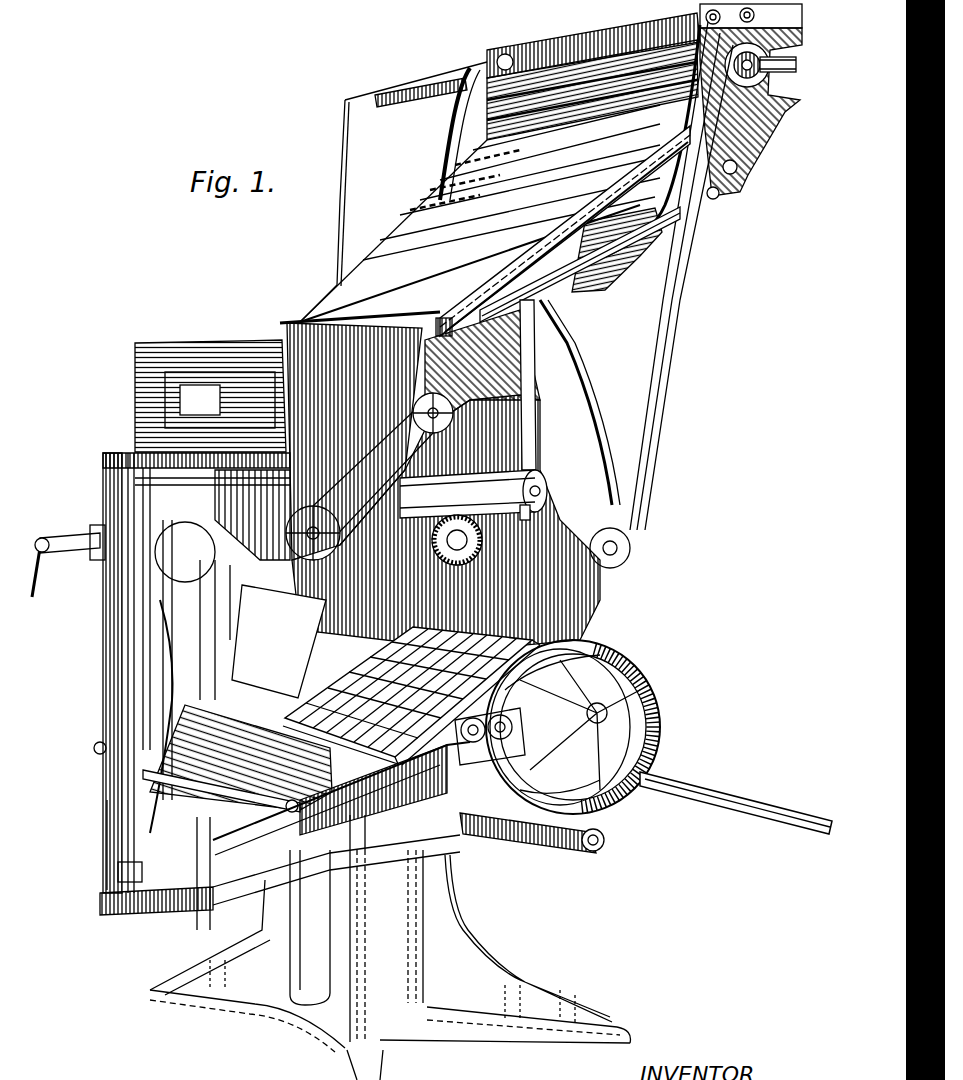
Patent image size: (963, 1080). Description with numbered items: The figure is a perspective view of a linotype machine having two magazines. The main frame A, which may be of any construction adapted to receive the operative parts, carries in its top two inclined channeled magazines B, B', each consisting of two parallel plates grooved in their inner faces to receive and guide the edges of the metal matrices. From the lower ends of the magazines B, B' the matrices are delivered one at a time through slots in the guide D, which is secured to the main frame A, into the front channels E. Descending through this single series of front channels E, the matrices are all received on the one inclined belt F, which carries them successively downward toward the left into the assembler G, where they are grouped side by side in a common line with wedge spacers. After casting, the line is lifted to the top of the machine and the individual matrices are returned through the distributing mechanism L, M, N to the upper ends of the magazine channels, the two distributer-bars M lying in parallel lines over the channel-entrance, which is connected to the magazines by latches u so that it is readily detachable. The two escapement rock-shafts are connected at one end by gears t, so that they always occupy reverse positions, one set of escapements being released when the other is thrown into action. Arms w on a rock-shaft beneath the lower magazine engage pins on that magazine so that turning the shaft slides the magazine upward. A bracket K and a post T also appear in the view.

The main frame A is at (368, 880).
The inclined channeled magazine B is at (565, 231).
The inclined channeled magazine B' is at (580, 266).
The guide D is at (360, 436).
The front channels E is at (288, 353).
The inclined belt F is at (455, 428).
The assembler G is at (253, 588).
The distributor bracket K is at (742, 98).
The distributing mechanism L is at (470, 191).
The distributer-bar M is at (637, 30).
The distributing mechanism N is at (548, 100).
The post T is at (505, 352).
The gears t is at (446, 318).
The latches u is at (736, 174).
The arms w is at (716, 200).